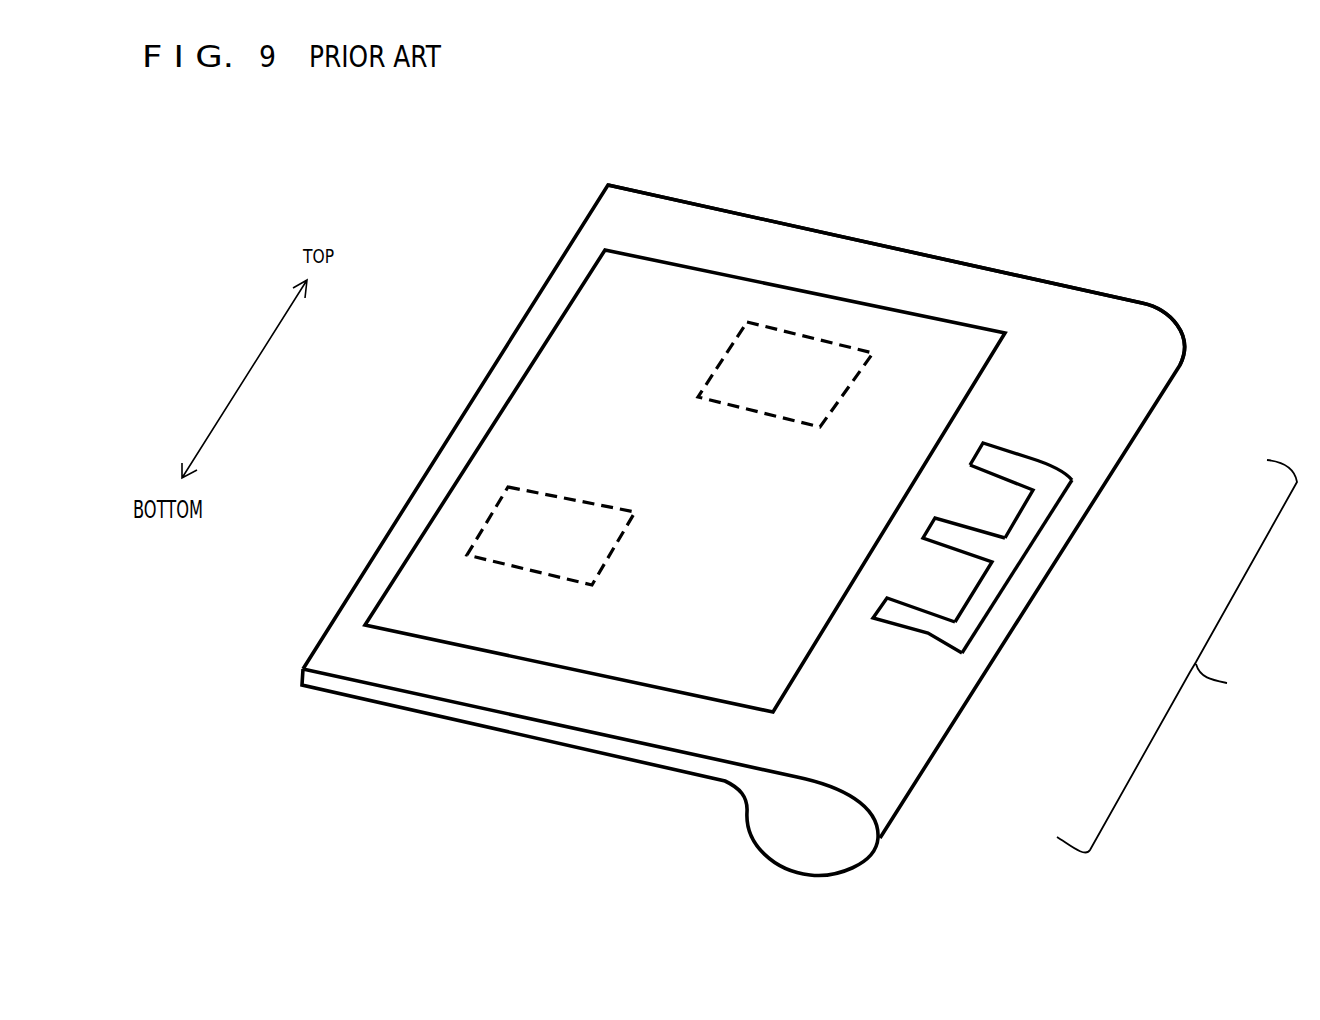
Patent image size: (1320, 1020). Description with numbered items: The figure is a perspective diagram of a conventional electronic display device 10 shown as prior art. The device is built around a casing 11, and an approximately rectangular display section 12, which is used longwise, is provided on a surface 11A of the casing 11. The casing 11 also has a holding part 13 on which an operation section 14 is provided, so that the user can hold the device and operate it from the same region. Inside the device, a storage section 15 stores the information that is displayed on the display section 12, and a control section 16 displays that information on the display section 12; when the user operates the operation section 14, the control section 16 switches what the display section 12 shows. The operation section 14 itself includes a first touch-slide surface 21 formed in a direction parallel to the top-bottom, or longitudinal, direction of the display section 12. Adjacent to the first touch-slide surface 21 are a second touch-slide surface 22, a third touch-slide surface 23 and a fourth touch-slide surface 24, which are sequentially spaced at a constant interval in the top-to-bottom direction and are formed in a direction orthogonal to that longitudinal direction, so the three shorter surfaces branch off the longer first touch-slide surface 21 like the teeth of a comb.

The electronic display device 10 is at (598, 124).
The casing 11 is at (900, 247).
The surface 11A is at (950, 290).
The display section 12 is at (547, 407).
The holding part 13 is at (882, 743).
The operation section 14 is at (1177, 656).
The storage section 15 is at (798, 363).
The control section 16 is at (530, 540).
The first touch-slide surface 21 is at (1040, 508).
The second touch-slide surface 22 is at (1005, 463).
The third touch-slide surface 23 is at (958, 537).
The fourth touch-slide surface 24 is at (922, 622).